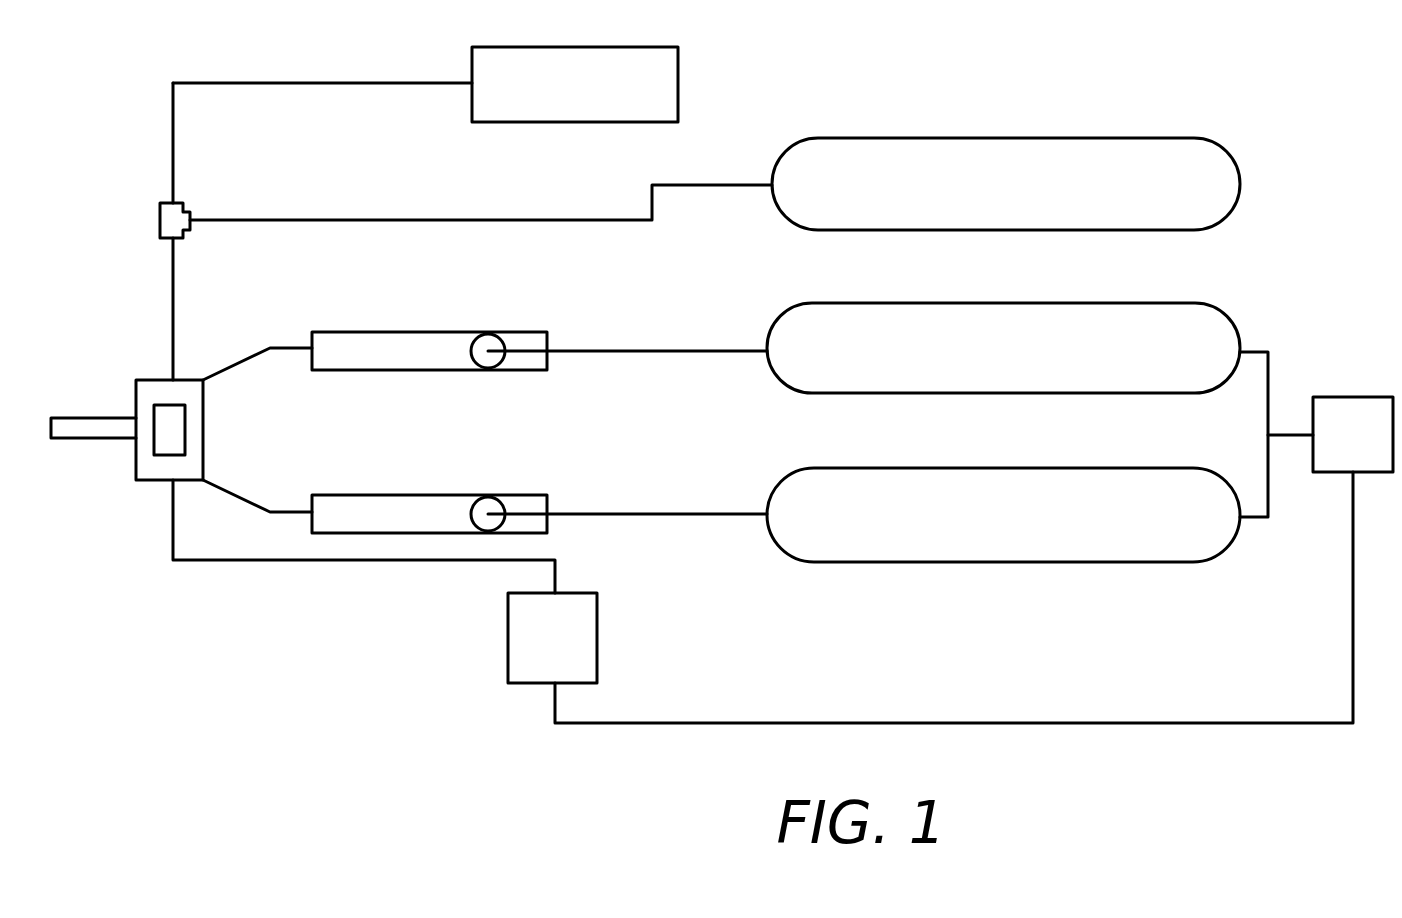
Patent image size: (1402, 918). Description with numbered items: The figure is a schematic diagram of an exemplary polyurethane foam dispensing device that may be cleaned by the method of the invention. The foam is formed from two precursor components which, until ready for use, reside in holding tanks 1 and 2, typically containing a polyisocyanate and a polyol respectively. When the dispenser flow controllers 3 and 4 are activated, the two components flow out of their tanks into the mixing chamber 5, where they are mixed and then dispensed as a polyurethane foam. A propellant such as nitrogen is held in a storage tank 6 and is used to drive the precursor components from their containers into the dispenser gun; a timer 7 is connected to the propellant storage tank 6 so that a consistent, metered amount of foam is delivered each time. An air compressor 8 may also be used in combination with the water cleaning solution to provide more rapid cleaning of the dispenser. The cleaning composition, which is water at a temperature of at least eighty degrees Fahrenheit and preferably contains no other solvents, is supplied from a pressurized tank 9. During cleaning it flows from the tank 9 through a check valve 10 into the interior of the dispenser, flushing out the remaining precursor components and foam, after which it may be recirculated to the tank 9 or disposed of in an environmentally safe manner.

The holding tank 1 is at (982, 364).
The holding tank 2 is at (1030, 533).
The dispenser flow controller 3 is at (415, 332).
The dispenser flow controller 4 is at (407, 495).
The mixing chamber 5 is at (80, 417).
The storage tank 6 is at (1370, 452).
The timer 7 is at (538, 652).
The air compressor 8 is at (985, 195).
The pressurized tank 9 is at (593, 97).
The check valve 10 is at (165, 203).